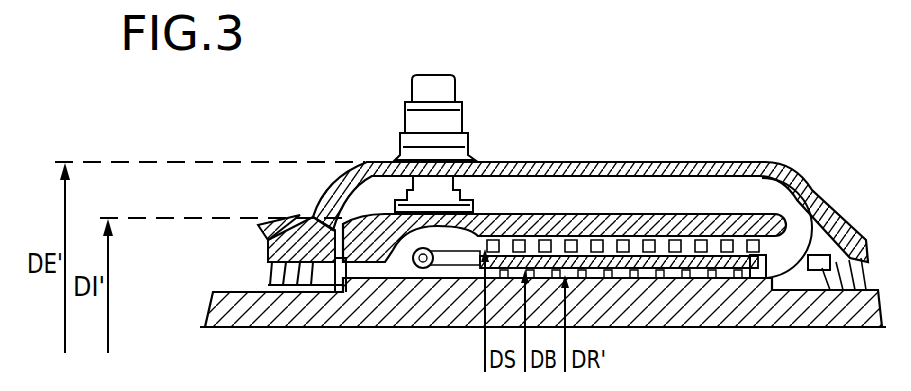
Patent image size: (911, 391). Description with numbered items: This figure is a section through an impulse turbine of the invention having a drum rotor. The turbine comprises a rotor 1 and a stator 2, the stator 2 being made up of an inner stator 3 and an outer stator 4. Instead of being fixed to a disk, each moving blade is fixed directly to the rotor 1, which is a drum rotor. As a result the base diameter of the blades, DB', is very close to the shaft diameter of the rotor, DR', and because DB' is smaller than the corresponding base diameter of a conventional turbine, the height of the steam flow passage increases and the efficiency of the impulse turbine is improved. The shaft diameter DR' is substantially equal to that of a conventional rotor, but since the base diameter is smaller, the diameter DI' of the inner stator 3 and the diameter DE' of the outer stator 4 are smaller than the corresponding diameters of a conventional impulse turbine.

The rotor 1 is at (735, 303).
The stator 2 is at (797, 228).
The inner stator 3 is at (648, 212).
The outer stator 4 is at (712, 167).